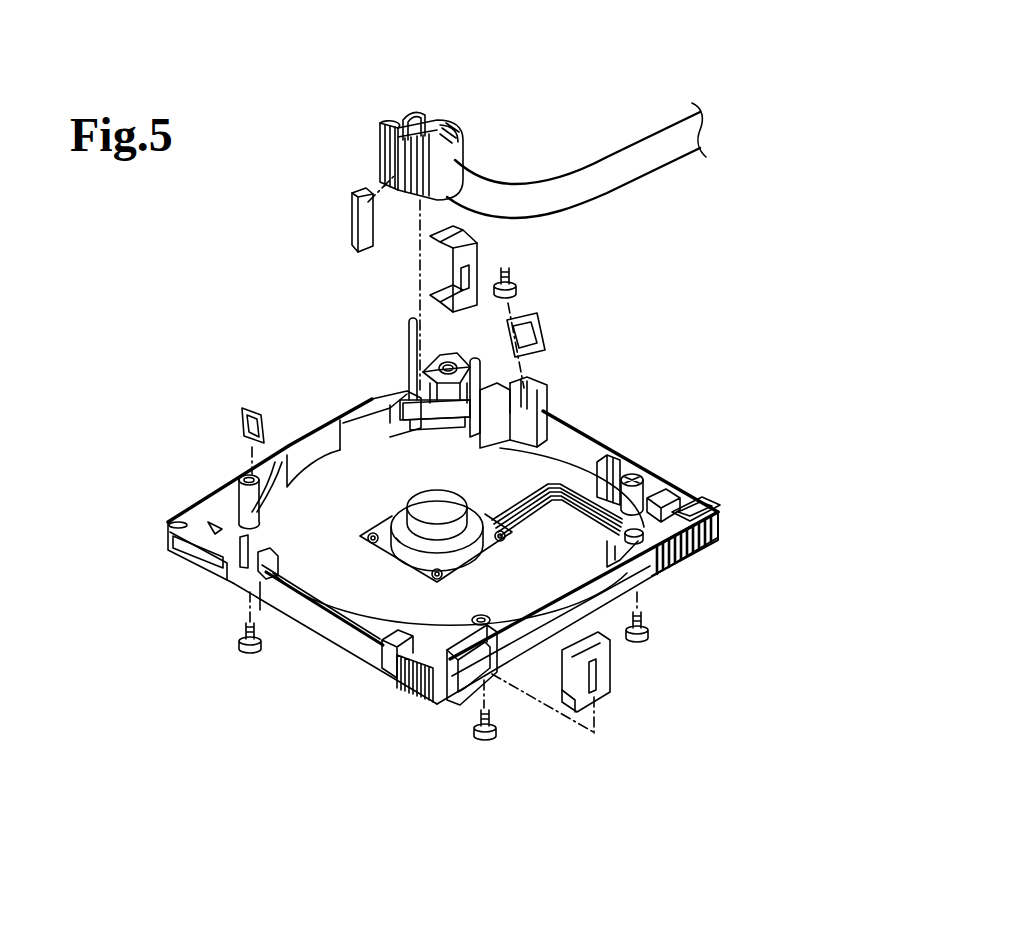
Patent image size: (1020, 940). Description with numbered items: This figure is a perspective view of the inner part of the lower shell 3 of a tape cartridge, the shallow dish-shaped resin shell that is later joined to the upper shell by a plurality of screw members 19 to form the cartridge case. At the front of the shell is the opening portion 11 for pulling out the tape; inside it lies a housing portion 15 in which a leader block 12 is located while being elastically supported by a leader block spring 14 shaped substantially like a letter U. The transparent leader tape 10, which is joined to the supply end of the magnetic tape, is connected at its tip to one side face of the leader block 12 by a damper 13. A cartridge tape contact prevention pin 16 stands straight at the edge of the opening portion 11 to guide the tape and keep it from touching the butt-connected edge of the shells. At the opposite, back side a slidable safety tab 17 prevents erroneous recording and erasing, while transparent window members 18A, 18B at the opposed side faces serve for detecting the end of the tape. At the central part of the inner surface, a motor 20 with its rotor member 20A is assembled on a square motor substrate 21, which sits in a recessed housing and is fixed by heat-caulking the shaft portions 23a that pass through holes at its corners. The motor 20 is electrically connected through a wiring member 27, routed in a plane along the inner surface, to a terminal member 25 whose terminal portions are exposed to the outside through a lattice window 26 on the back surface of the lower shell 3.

The lower shell 3 is at (342, 655).
The leader tape 10 is at (620, 150).
The opening portion 11 is at (372, 399).
The leader block 12 is at (440, 122).
The damper 13 is at (356, 220).
The leader block spring 14 is at (480, 255).
The housing portion 15 is at (453, 427).
The cartridge tape contact prevention pin 16 is at (408, 345).
The safety tab 17 is at (607, 667).
The transparent window member 18A is at (241, 418).
The transparent window member 18B is at (546, 331).
The screw member 19 is at (488, 740).
The motor 20 is at (473, 493).
The rotor member 20A is at (396, 538).
The motor substrate 21 is at (342, 603).
The shaft portion 23a is at (372, 537).
The terminal member 25 is at (683, 567).
The lattice window 26 is at (713, 550).
The wiring member 27 is at (630, 462).